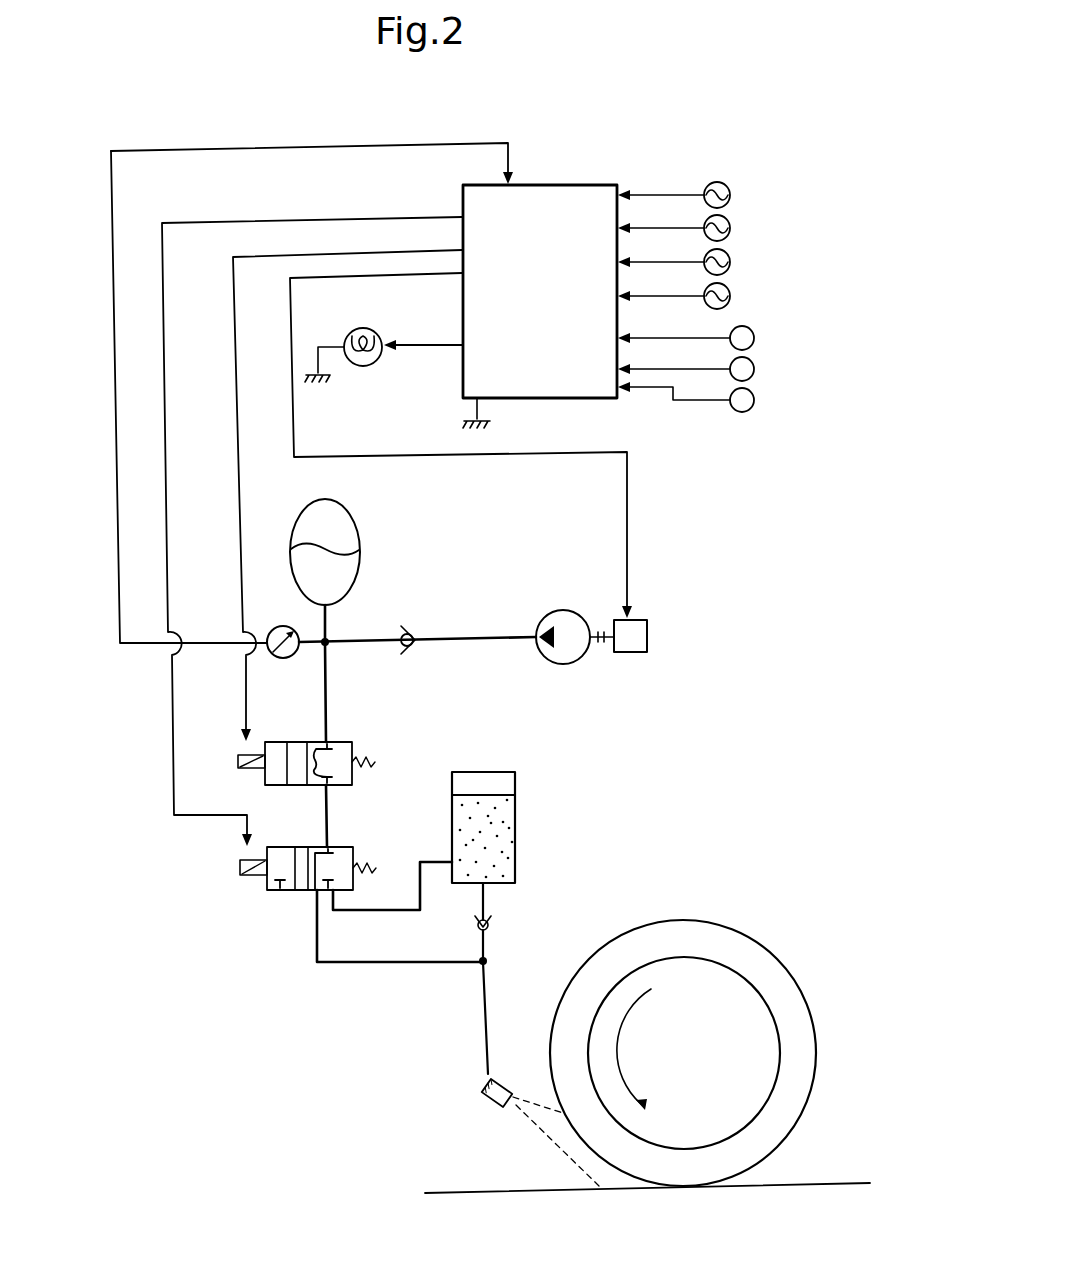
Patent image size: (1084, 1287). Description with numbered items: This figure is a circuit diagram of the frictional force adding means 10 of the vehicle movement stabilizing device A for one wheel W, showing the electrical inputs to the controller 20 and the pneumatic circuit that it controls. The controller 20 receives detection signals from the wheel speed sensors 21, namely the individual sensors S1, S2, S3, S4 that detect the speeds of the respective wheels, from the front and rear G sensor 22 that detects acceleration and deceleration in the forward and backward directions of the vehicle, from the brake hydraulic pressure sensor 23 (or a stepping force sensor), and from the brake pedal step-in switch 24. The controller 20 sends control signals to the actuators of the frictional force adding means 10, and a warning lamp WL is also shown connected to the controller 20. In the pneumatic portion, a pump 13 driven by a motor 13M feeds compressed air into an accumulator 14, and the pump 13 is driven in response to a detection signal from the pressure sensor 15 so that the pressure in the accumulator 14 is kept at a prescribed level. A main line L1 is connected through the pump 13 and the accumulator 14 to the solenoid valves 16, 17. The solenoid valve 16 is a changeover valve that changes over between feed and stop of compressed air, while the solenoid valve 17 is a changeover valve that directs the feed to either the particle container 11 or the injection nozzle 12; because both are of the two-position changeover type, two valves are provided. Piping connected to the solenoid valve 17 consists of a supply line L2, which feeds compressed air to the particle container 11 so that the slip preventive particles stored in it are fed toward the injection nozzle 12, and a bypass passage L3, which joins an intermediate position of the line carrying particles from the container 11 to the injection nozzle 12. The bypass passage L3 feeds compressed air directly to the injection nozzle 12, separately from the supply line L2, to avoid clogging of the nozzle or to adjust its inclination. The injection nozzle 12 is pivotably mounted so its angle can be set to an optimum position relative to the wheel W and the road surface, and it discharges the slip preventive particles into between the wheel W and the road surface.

The anti-lock brake control system A is at (144, 131).
The frictional force adding means 10 is at (103, 460).
The controller 20 is at (583, 182).
The wheel speed sensors 21 is at (772, 176).
The wheel speed sensor S1 is at (731, 195).
The wheel speed sensor S2 is at (731, 228).
The wheel speed sensor S3 is at (731, 262).
The wheel speed sensor S4 is at (731, 296).
The front and rear G sensor 22 is at (755, 338).
The brake hydraulic pressure sensor 23 is at (755, 369).
The brake pedal step-in switch 24 is at (755, 400).
The warning lamp WL is at (362, 328).
The accumulator 14 is at (353, 530).
The pressure sensor 15 is at (277, 628).
The pump 13 is at (558, 610).
The motor 13M is at (650, 630).
The solenoid valve 16 is at (346, 741).
The solenoid valve 17 is at (346, 847).
The main line L1 is at (325, 704).
The supply line L2 is at (376, 911).
The bypass passage L3 is at (395, 963).
The particle container 11 is at (515, 801).
The injection nozzle 12 is at (506, 1082).
The wheel W is at (690, 920).